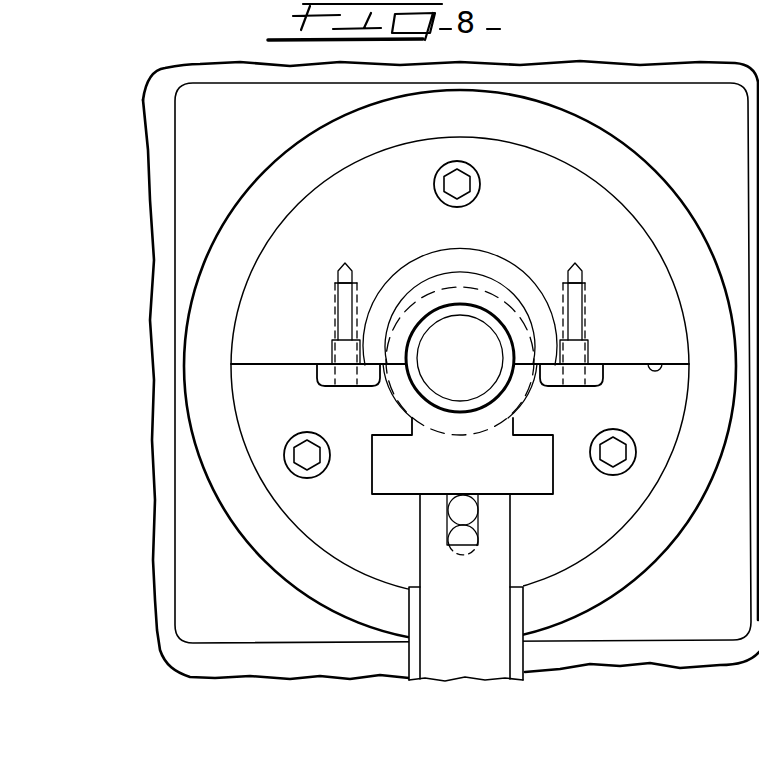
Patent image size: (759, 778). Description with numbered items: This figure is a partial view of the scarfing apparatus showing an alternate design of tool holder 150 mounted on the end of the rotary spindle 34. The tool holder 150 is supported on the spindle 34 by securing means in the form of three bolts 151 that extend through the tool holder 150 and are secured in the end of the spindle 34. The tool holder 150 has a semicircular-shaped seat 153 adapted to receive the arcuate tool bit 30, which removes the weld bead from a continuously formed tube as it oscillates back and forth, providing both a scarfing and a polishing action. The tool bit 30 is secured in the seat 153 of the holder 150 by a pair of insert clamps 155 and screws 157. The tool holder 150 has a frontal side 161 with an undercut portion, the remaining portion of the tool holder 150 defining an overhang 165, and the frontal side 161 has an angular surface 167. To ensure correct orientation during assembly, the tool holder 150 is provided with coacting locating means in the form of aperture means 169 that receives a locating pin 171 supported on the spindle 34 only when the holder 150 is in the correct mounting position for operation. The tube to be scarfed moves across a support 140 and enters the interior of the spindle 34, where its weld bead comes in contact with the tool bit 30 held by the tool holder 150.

The arcuate tool bit 30 is at (393, 353).
The spindle 34 is at (207, 333).
The support 140 is at (486, 476).
The tool holder 150 is at (595, 233).
The bolts 151 is at (455, 176).
The semicircular-shaped seat 153 is at (499, 291).
The insert clamps 155 is at (320, 370).
The screws 157 is at (340, 318).
The frontal side 161 is at (352, 182).
The overhang 165 is at (655, 364).
The angular surface 167 is at (368, 236).
The aperture means 169 is at (452, 538).
The locating pin 171 is at (468, 537).